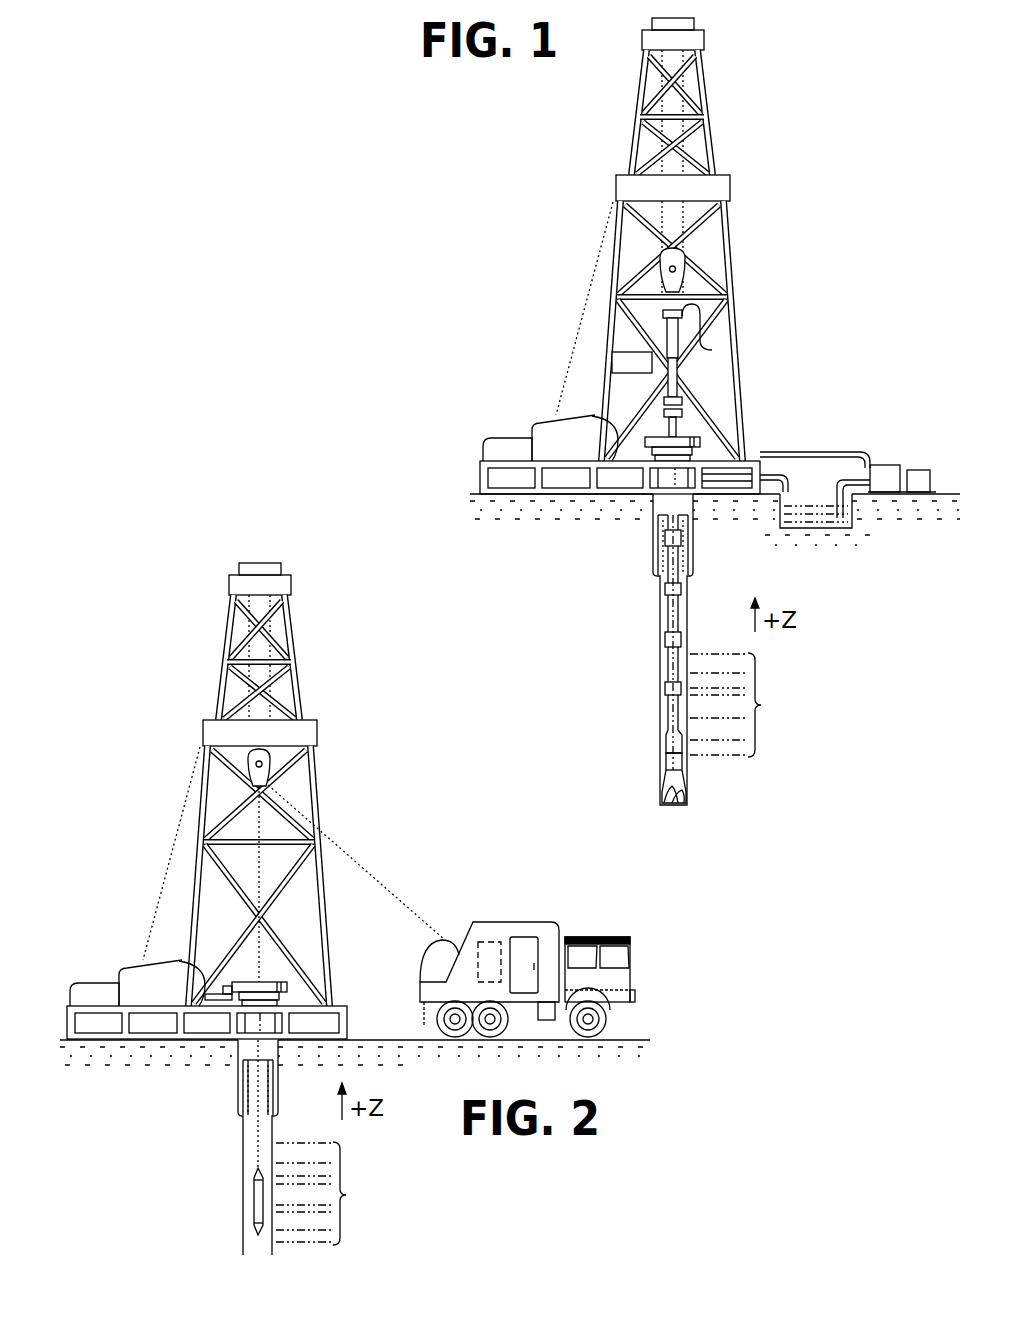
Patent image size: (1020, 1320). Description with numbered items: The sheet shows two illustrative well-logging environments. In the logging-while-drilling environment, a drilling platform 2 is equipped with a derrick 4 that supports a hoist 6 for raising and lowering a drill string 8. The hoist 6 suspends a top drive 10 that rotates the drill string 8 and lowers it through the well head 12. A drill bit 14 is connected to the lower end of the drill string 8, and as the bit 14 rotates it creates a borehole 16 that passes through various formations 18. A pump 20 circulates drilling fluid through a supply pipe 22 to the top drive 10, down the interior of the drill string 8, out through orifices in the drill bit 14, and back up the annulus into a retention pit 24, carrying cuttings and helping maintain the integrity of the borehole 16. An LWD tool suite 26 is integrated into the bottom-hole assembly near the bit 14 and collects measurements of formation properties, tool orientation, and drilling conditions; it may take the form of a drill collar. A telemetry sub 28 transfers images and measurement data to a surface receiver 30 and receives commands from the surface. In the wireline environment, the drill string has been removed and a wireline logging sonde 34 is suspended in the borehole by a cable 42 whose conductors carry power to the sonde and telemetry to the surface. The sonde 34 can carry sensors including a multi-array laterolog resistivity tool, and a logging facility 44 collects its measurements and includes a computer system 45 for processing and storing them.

In FIG. 1, the drilling platform 2 is at (478, 471).
In FIG. 2, the drilling platform 2 is at (222, 999).
In FIG. 1, the derrick 4 is at (716, 145).
In FIG. 2, the derrick 4 is at (251, 784).
In FIG. 1, the hoist 6 is at (684, 266).
In FIG. 2, the hoist 6 is at (270, 764).
In FIG. 1, the drill string 8 is at (673, 649).
In FIG. 1, the top drive 10 is at (672, 336).
In FIG. 1, the well head 12 is at (692, 433).
In FIG. 2, the well head 12 is at (292, 957).
In FIG. 1, the drill bit 14 is at (684, 797).
In FIG. 1, the borehole 16 is at (686, 630).
In FIG. 1, the formations 18 is at (744, 705).
In FIG. 2, the formations 18 is at (330, 1193).
In FIG. 1, the pump 20 is at (880, 469).
In FIG. 1, the supply pipe 22 is at (830, 452).
In FIG. 1, the retention pit 24 is at (795, 520).
In FIG. 1, the LWD tool suite 26 is at (666, 765).
In FIG. 1, the telemetry sub 28 is at (668, 747).
In FIG. 1, the surface receiver 30 is at (678, 398).
In FIG. 2, the wireline logging sonde 34 is at (256, 1194).
In FIG. 2, the cable 42 is at (334, 841).
In FIG. 2, the logging facility 44 is at (546, 921).
In FIG. 2, the computer system 45 is at (481, 945).